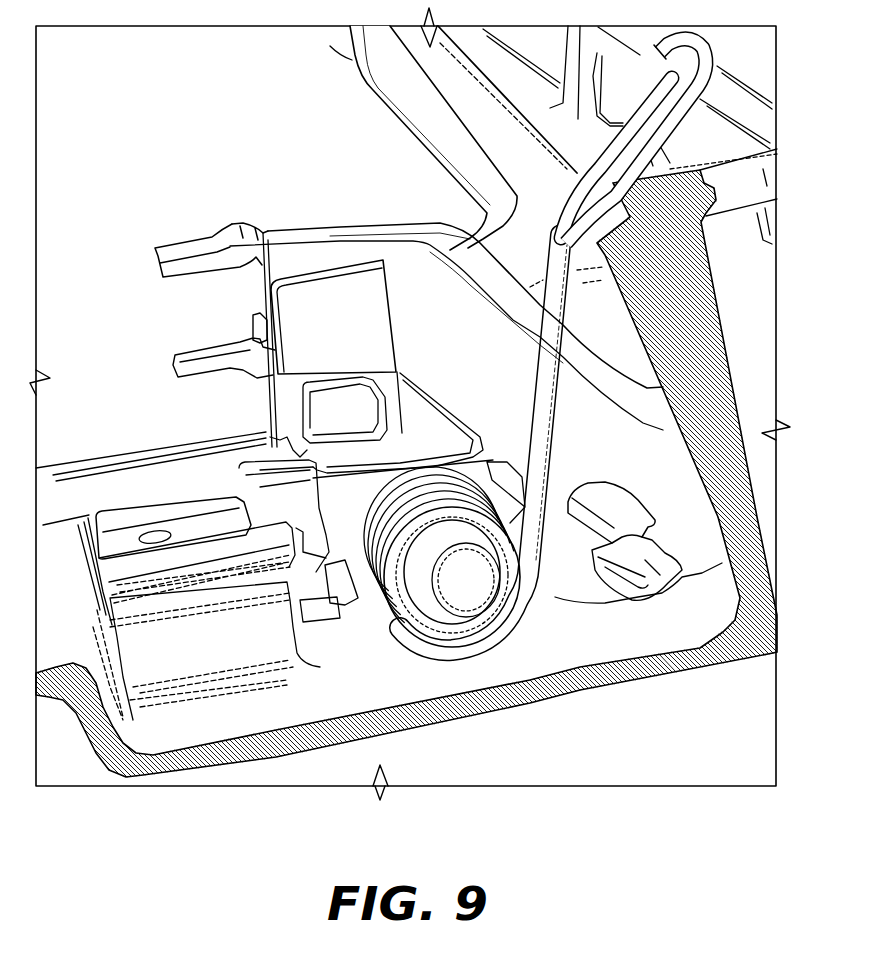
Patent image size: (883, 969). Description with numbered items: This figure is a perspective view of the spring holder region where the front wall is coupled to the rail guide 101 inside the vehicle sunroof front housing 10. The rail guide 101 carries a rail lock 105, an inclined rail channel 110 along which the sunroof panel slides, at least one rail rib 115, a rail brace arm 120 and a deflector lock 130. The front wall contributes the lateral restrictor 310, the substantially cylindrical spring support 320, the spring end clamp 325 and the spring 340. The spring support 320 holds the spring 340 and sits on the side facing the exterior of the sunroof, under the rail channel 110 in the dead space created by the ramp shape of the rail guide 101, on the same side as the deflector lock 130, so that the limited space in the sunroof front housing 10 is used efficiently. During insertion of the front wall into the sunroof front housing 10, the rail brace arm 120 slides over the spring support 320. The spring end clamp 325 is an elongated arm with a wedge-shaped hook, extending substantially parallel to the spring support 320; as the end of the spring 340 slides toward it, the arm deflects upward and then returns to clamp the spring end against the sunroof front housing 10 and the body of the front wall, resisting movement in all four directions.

The sunroof front housing 10 is at (760, 177).
The rail guide 101 is at (427, 259).
The rail lock 105 is at (243, 232).
The rail channel 110 is at (257, 258).
The rail rib 115 is at (126, 568).
The rail brace arm 120 is at (266, 503).
The deflector lock 130 is at (652, 602).
The lateral restrictor 310 is at (290, 323).
The spring support 320 is at (477, 602).
The spring end clamp 325 is at (356, 600).
The spring 340 is at (530, 600).